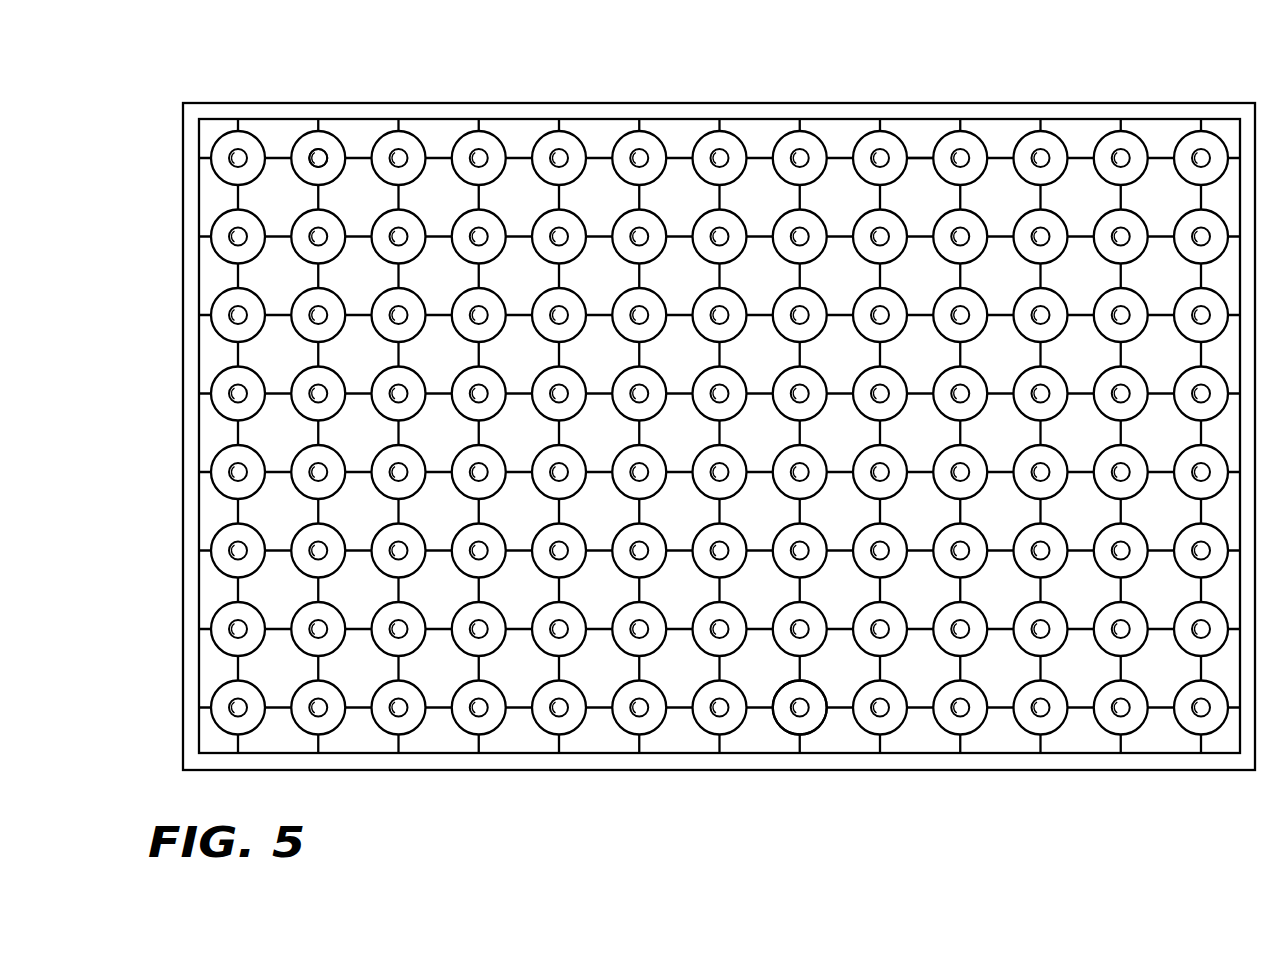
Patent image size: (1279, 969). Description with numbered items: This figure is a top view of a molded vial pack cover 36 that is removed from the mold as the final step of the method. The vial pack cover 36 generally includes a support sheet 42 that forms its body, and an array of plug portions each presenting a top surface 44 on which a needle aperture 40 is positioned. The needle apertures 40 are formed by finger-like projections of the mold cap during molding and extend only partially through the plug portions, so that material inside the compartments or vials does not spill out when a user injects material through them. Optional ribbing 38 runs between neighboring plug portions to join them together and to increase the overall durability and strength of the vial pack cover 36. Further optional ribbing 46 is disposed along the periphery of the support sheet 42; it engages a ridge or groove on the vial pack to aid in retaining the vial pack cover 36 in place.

The vial pack cover 36 is at (719, 424).
The ribbing 38 is at (917, 157).
The needle aperture 40 is at (320, 152).
The support sheet 42 is at (442, 737).
The top surface of plug portion 44 is at (788, 720).
The ribbing 46 is at (1090, 760).